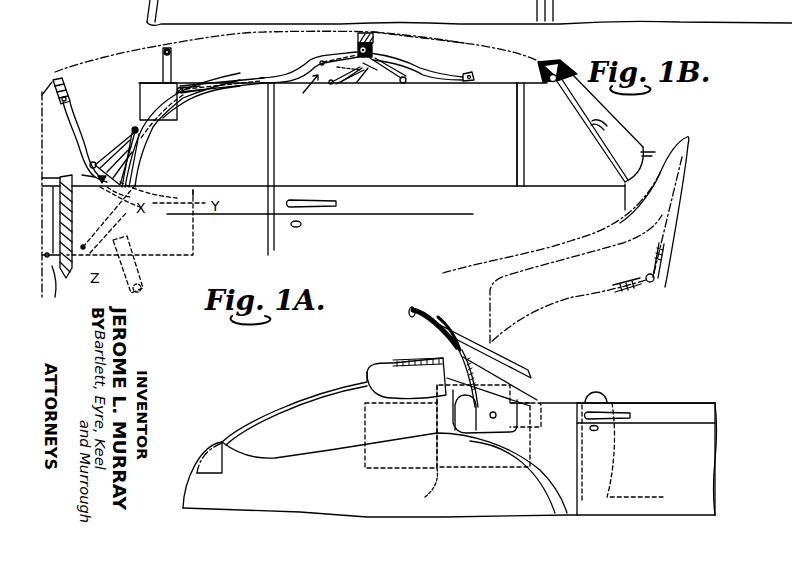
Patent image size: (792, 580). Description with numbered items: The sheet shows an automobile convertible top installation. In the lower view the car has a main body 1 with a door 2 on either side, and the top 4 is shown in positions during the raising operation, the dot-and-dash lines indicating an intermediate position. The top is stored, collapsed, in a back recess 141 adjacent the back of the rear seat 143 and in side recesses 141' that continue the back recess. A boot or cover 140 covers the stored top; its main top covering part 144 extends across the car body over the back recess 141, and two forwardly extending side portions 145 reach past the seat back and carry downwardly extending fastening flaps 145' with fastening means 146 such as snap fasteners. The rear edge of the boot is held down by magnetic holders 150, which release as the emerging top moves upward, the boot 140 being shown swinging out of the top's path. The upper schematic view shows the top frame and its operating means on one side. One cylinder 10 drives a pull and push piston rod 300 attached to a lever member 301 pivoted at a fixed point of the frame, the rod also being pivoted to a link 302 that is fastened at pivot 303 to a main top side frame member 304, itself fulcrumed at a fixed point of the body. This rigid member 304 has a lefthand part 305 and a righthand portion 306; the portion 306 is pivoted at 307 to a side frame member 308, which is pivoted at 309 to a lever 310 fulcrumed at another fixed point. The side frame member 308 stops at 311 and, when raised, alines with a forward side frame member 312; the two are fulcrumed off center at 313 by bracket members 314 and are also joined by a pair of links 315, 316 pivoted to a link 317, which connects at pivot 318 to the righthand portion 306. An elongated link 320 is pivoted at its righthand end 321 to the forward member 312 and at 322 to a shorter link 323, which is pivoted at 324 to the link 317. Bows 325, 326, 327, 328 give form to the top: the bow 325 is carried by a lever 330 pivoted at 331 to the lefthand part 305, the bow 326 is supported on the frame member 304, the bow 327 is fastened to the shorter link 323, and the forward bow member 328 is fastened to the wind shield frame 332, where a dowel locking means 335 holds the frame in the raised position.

In FIG. 1A, the main body 1 is at (708, 486).
In FIG. 1A, the door 2 is at (698, 445).
In FIG. 1B, the top 4 is at (470, 48).
In FIG. 1A, the top 4 is at (403, 355).
In FIG. 1B, the cylinder 10 is at (145, 278).
In FIG. 1A, the boot or cover 140 is at (540, 399).
In FIG. 1B, the back recess 141 is at (62, 242).
In FIG. 1A, the back recess 141 is at (401, 447).
In FIG. 1B, the side recesses 141' is at (354, 123).
In FIG. 1A, the side recesses 141' is at (486, 438).
In FIG. 1A, the rear seat 143 is at (421, 489).
In FIG. 1A, the main top covering part 144 is at (507, 350).
In FIG. 1A, the side portions 145 is at (511, 420).
In FIG. 1A, the fastening flaps 145' is at (541, 415).
In FIG. 1A, the fastening means 146 is at (491, 418).
In FIG. 1A, the magnetic holders 150 is at (432, 303).
In FIG. 1B, the piston rod 300 is at (133, 240).
In FIG. 1B, the lever member 301 is at (133, 183).
In FIG. 1B, the link 302 is at (123, 147).
In FIG. 1B, the pivot 303 is at (133, 128).
In FIG. 1B, the main top side frame member 304 is at (152, 76).
In FIG. 1B, the lefthand part 305 is at (102, 176).
In FIG. 1B, the righthand portion 306 is at (158, 90).
In FIG. 1B, the pivot 307 is at (161, 115).
In FIG. 1B, the side frame member 308 is at (207, 95).
In FIG. 1A, the side frame member 308 is at (588, 303).
In FIG. 1B, the pivot 309 is at (145, 133).
In FIG. 1B, the lever 310 is at (127, 223).
In FIG. 1B, the end of side frame member 311 is at (352, 84).
In FIG. 1B, the forward side frame member 312 is at (489, 85).
In FIG. 1A, the forward side frame member 312 is at (669, 231).
In FIG. 1B, the fulcrum 313 is at (370, 75).
In FIG. 1A, the fulcrum 313 is at (658, 281).
In FIG. 1B, the bracket members 314 is at (367, 85).
In FIG. 1B, the link 315 is at (343, 85).
In FIG. 1B, the link 316 is at (393, 60).
In FIG. 1B, the link 317 is at (231, 81).
In FIG. 1B, the pivot 318 is at (188, 88).
In FIG. 1B, the elongated link 320 is at (433, 68).
In FIG. 1B, the righthand end of elongated link 321 is at (475, 74).
In FIG. 1B, the pivot 322 is at (358, 48).
In FIG. 1B, the shorter link 323 is at (323, 90).
In FIG. 1B, the pivot 324 is at (320, 62).
In FIG. 1B, the bow 325 is at (58, 79).
In FIG. 1B, the bow 326 is at (163, 48).
In FIG. 1B, the bow 327 is at (373, 35).
In FIG. 1B, the forward bow member 328 is at (560, 61).
In FIG. 1B, the lever 330 is at (71, 127).
In FIG. 1B, the pivot 331 is at (90, 173).
In FIG. 1B, the wind shield frame 332 is at (626, 122).
In FIG. 1B, the dowel locking means 335 is at (555, 83).